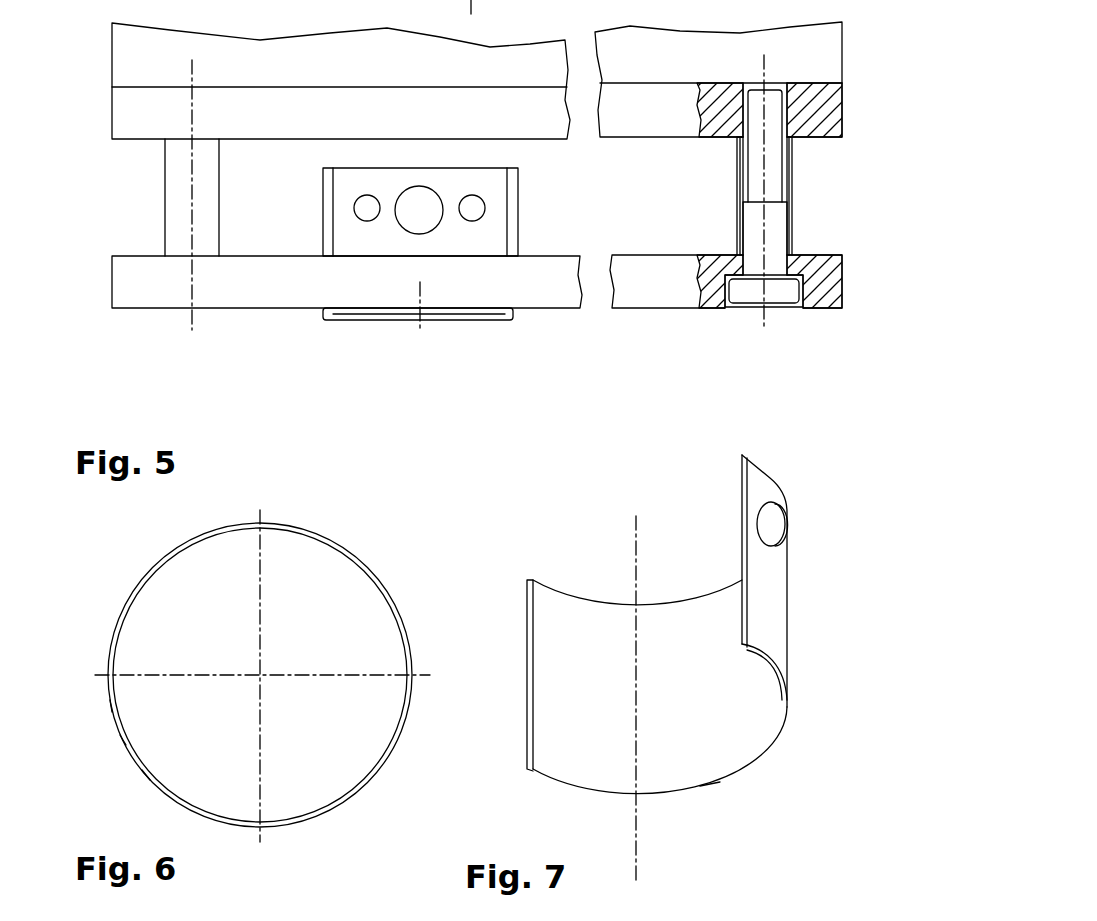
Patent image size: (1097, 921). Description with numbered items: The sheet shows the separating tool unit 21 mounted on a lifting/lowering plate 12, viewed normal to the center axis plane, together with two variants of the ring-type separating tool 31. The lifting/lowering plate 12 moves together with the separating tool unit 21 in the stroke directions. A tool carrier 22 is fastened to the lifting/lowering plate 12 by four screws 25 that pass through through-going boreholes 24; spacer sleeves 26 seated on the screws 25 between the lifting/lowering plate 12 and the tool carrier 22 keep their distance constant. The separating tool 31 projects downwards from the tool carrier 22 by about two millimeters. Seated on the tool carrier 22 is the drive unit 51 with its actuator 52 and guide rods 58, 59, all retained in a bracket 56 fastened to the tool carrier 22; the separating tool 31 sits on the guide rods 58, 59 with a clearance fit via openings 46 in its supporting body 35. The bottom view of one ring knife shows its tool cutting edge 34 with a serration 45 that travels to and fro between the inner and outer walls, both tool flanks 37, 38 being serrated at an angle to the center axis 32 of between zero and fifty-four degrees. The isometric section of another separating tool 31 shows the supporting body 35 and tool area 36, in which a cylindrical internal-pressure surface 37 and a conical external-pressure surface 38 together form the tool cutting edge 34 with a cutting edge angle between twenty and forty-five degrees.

In FIG. 5, the lifting/lowering plate 12 is at (140, 110).
In FIG. 5, the separating tool unit 21 is at (133, 248).
In FIG. 5, the tool carrier 22 is at (135, 282).
In FIG. 5, the through-going boreholes 24 is at (803, 292).
In FIG. 5, the screws 25 is at (772, 163).
In FIG. 5, the spacer sleeves 26 is at (792, 225).
In FIG. 5, the separating tool 31 is at (428, 313).
In FIG. 6, the separating tool 31 is at (145, 570).
In FIG. 7, the separating tool 31 is at (520, 663).
In FIG. 7, the center axis 32 is at (636, 538).
In FIG. 6, the tool cutting edge 34 is at (118, 623).
In FIG. 7, the tool cutting edge 34 is at (720, 782).
In FIG. 7, the supporting body 35 is at (770, 590).
In FIG. 7, the tool area 36 is at (553, 763).
In FIG. 6, the internal-pressure surface 37 is at (125, 744).
In FIG. 7, the internal-pressure surface 37 is at (565, 785).
In FIG. 6, the external-pressure surface 38 is at (148, 778).
In FIG. 7, the external-pressure surface 38 is at (770, 660).
In FIG. 6, the serration 45 is at (112, 713).
In FIG. 7, the opening 46 is at (787, 540).
In FIG. 5, the drive unit 51 is at (308, 198).
In FIG. 5, the actuator 52 is at (410, 234).
In FIG. 5, the bracket 56 is at (493, 231).
In FIG. 5, the guide rod 58 is at (472, 222).
In FIG. 5, the guide rod 59 is at (360, 221).